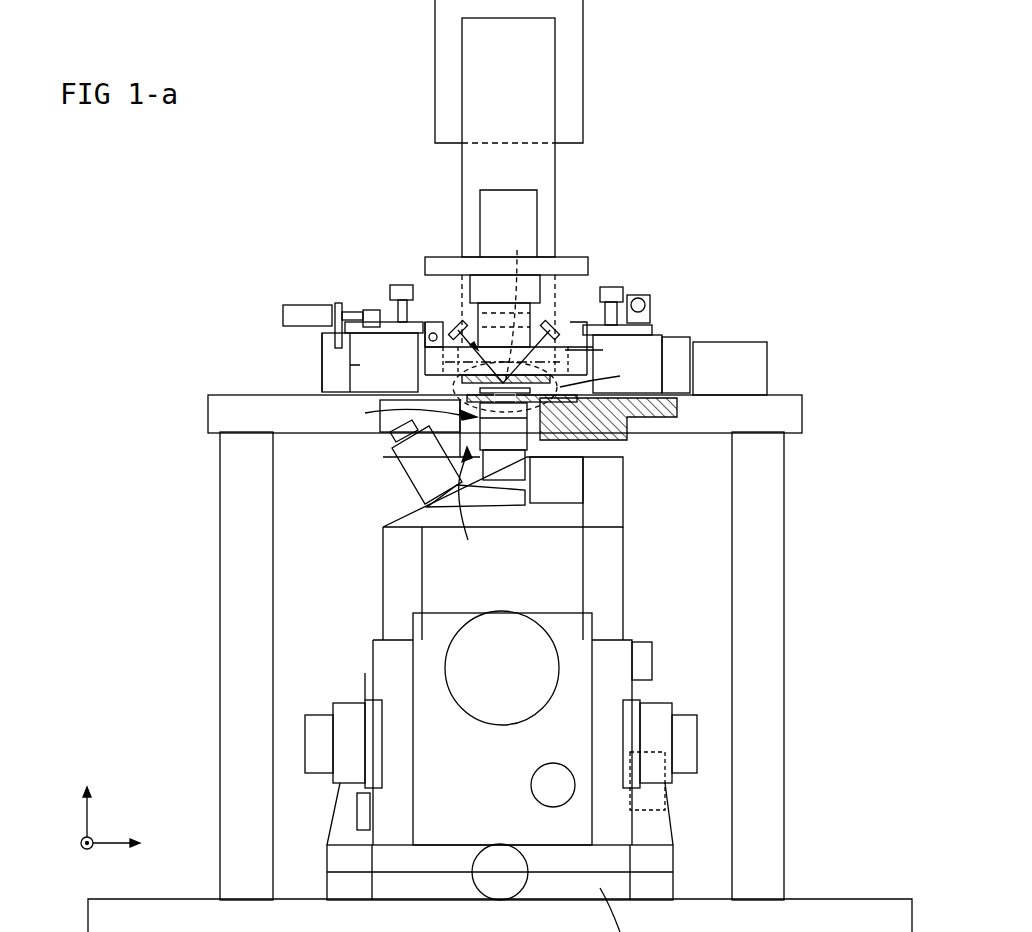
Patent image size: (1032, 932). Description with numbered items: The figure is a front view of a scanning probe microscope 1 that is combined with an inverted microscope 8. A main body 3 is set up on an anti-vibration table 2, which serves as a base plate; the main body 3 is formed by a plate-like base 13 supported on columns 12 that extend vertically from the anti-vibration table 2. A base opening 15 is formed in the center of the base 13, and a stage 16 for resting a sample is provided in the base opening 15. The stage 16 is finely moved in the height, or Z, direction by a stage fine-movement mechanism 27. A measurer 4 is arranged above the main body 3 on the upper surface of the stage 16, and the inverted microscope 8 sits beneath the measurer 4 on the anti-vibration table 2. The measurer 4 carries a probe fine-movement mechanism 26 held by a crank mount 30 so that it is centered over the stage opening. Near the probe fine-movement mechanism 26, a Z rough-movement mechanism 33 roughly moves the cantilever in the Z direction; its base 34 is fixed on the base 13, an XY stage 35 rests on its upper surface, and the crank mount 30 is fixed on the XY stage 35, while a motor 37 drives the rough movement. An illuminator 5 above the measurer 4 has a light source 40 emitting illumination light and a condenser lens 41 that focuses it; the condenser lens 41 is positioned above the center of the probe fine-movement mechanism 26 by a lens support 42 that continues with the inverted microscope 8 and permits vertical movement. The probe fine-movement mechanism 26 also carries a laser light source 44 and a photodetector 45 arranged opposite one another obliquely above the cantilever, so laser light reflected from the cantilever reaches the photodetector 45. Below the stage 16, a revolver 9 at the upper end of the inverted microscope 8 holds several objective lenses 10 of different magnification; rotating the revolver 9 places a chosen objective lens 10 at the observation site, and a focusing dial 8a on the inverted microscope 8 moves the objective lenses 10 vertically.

The scanning probe microscope 1 is at (765, 52).
The anti-vibration table 2 is at (848, 900).
The main body 3 is at (519, 666).
The measurer 4 is at (808, 360).
The illuminator 5 is at (617, 100).
The inverted microscope 8 is at (515, 650).
The focusing dial 8a is at (700, 730).
The revolver 9 is at (430, 517).
The objective lens 10 is at (397, 430).
The column 12 is at (222, 710).
The base 13 is at (803, 413).
The base opening 15 is at (460, 383).
The stage 16 is at (470, 413).
The probe fine-movement mechanism 26 is at (565, 348).
The stage fine-movement mechanism 27 is at (613, 422).
The crank mount 30 is at (397, 320).
The Z rough-movement mechanism 33 is at (350, 366).
The base 34 is at (332, 379).
The XY stage 35 is at (383, 328).
The motor 37 is at (745, 358).
The light source 40 is at (443, 97).
The condenser lens 41 is at (478, 290).
The lens support 42 is at (545, 175).
The laser light source 44 is at (555, 320).
The photodetector 45 is at (453, 327).